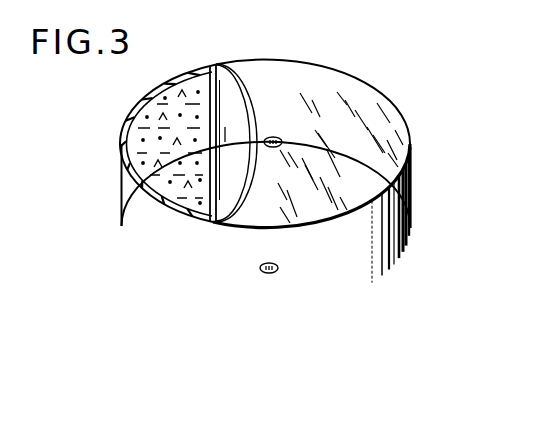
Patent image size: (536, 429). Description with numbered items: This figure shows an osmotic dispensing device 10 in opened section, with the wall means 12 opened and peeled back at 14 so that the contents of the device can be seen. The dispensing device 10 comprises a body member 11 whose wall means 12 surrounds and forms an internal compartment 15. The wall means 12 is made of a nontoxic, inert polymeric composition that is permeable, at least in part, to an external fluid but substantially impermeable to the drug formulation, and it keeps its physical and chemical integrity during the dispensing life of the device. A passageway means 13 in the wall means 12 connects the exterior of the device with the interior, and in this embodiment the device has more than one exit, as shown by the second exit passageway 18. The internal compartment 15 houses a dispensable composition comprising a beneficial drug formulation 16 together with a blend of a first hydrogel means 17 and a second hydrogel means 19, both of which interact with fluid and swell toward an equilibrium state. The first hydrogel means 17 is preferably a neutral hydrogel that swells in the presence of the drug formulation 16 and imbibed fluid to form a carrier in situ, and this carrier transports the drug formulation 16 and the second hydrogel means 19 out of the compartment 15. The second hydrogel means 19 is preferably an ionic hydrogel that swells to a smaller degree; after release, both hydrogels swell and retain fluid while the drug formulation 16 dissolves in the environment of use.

The dispensing device 10 is at (370, 65).
The body member 11 is at (408, 192).
The wall means 12 is at (156, 196).
The passageway means 13 is at (270, 274).
The opened and peeled-back portion of wall 14 is at (238, 78).
The internal compartment 15 is at (188, 86).
The beneficial drug formulation 16 is at (147, 115).
The first hydrogel means 17 is at (140, 151).
The second exit passageway 18 is at (272, 137).
The second hydrogel means 19 is at (143, 164).